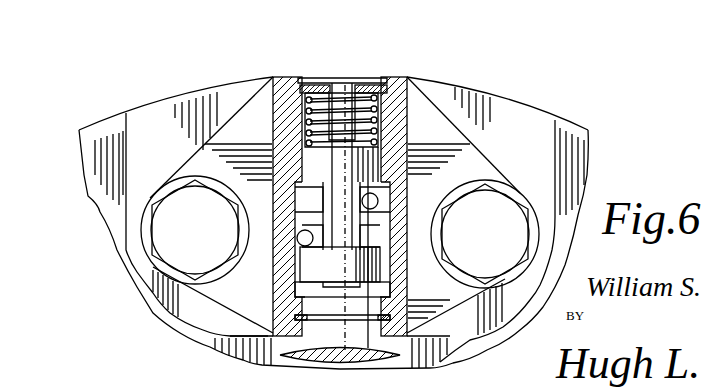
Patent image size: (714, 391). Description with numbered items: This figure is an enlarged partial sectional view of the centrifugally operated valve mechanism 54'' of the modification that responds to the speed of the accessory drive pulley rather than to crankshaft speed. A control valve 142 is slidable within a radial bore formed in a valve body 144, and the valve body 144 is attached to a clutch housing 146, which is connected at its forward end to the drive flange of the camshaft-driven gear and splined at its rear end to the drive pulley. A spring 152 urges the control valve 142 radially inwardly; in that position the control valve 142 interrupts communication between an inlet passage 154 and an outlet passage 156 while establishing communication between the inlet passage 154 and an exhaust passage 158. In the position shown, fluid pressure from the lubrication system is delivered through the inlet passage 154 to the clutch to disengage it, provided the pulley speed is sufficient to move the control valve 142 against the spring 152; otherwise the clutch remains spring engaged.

The clutch housing 146 is at (150, 112).
The valve body 144 is at (430, 105).
The control valve 142 is at (306, 160).
The valve mechanism 54'' is at (353, 183).
The spring 152 is at (372, 100).
The inlet passage 154 is at (378, 201).
The outlet passage 156 is at (297, 238).
The exhaust passage 158 is at (384, 284).